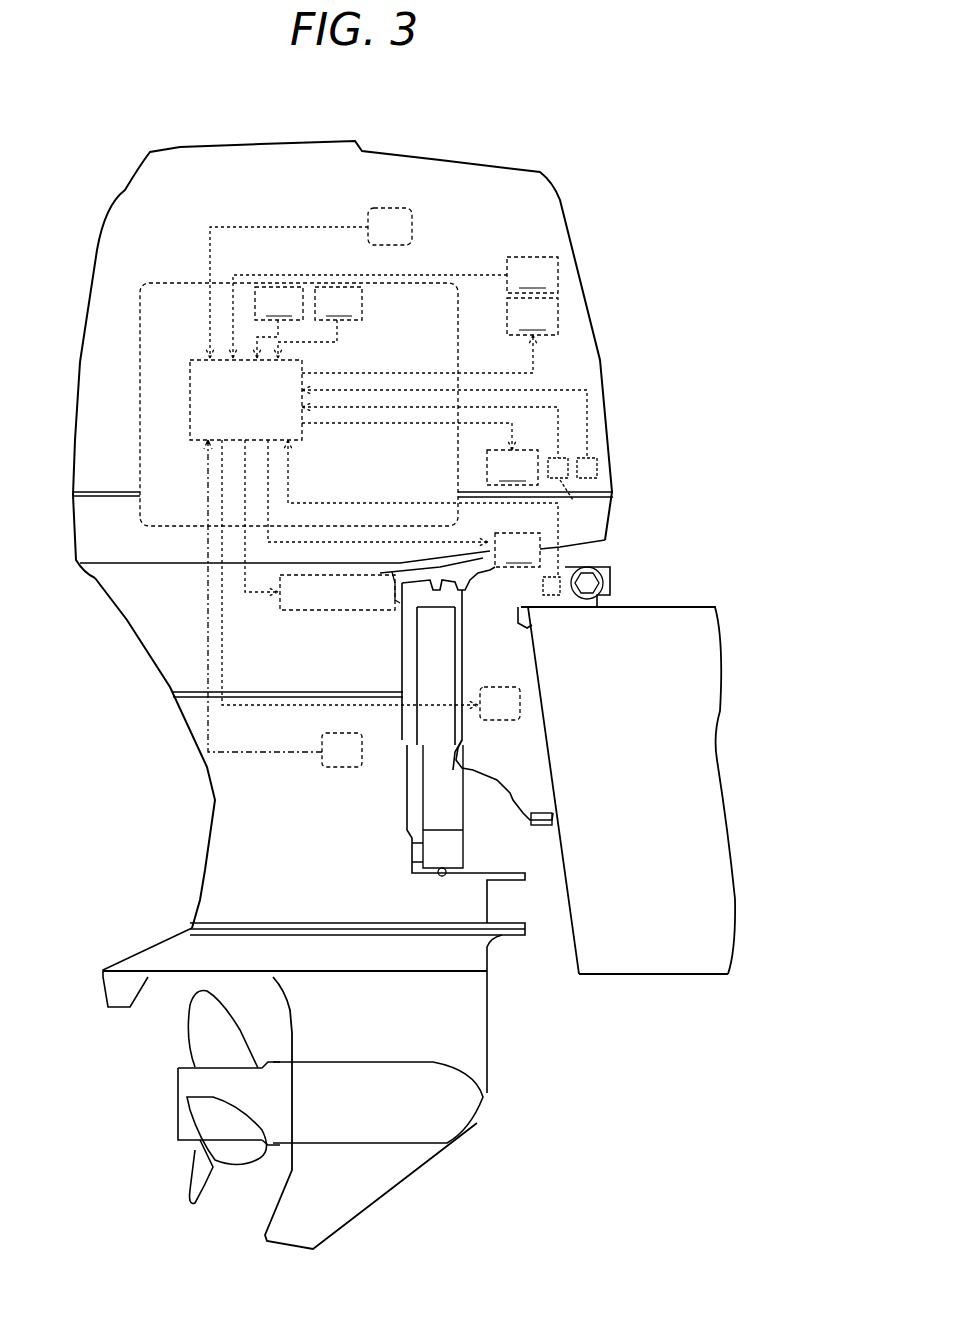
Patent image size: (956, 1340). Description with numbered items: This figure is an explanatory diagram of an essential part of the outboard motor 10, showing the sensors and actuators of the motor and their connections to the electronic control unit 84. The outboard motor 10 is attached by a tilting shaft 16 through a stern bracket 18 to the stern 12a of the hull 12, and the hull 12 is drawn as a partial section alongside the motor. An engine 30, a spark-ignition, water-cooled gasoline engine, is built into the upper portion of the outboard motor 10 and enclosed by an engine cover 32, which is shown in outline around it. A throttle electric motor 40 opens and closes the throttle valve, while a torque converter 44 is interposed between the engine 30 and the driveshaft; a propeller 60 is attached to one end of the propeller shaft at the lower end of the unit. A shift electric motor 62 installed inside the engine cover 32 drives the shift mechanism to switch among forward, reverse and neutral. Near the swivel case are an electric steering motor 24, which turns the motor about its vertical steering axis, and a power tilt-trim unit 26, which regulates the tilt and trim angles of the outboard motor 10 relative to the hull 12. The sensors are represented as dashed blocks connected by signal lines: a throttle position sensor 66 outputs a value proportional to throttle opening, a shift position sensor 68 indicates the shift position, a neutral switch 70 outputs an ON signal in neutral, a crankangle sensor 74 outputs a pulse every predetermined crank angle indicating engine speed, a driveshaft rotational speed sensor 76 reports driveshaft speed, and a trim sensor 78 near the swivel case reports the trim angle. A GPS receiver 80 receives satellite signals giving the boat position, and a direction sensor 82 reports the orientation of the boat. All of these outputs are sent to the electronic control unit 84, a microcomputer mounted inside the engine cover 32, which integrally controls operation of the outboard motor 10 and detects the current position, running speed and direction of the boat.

The outboard motor 10 is at (570, 176).
The hull 12 is at (612, 975).
The stern 12a is at (588, 952).
The tilting shaft 16 is at (612, 580).
The stern bracket 18 is at (532, 783).
The electric steering motor 24 is at (404, 605).
The power tilt-trim unit 26 is at (520, 692).
The engine 30 is at (140, 323).
The engine cover 32 is at (97, 250).
The throttle electric motor 40 is at (430, 335).
The torque converter 44 is at (337, 610).
The propeller 60 is at (195, 1172).
The shift electric motor 62 is at (420, 454).
The throttle position sensor 66 is at (393, 307).
The shift position sensor 68 is at (573, 500).
The neutral switch 70 is at (600, 462).
The crankangle sensor 74 is at (412, 218).
The driveshaft rotational speed sensor 76 is at (345, 767).
The trim sensor 78 is at (573, 556).
The GPS receiver 80 is at (278, 322).
The direction sensor 82 is at (318, 322).
The electronic control unit 84 is at (190, 403).